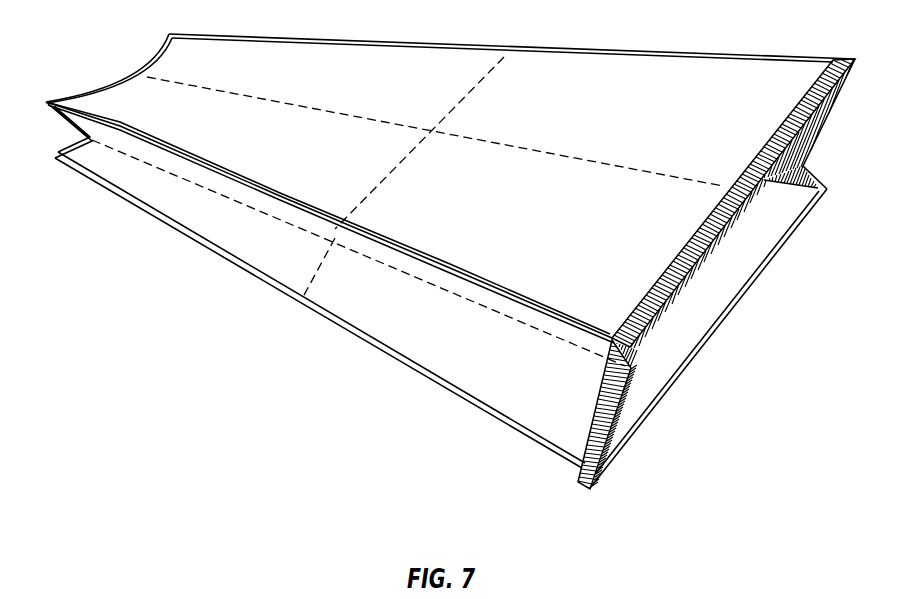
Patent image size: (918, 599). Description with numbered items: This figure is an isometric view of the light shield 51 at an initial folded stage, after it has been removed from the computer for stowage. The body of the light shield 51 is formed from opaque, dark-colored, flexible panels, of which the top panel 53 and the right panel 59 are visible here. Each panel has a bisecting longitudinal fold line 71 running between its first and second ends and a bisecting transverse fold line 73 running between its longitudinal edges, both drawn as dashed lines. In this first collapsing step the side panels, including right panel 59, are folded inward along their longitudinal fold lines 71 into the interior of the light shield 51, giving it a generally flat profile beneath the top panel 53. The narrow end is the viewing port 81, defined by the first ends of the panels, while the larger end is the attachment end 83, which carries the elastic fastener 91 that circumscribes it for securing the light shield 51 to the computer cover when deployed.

The light shield 51 is at (82, 67).
The top panel 53 is at (570, 72).
The right panel 59 is at (407, 335).
The longitudinal fold line 71 is at (300, 98).
The transverse fold line 73 is at (458, 100).
The viewing port 81 is at (63, 133).
The attachment end 83 is at (806, 271).
The elastic fastener 91 is at (730, 308).